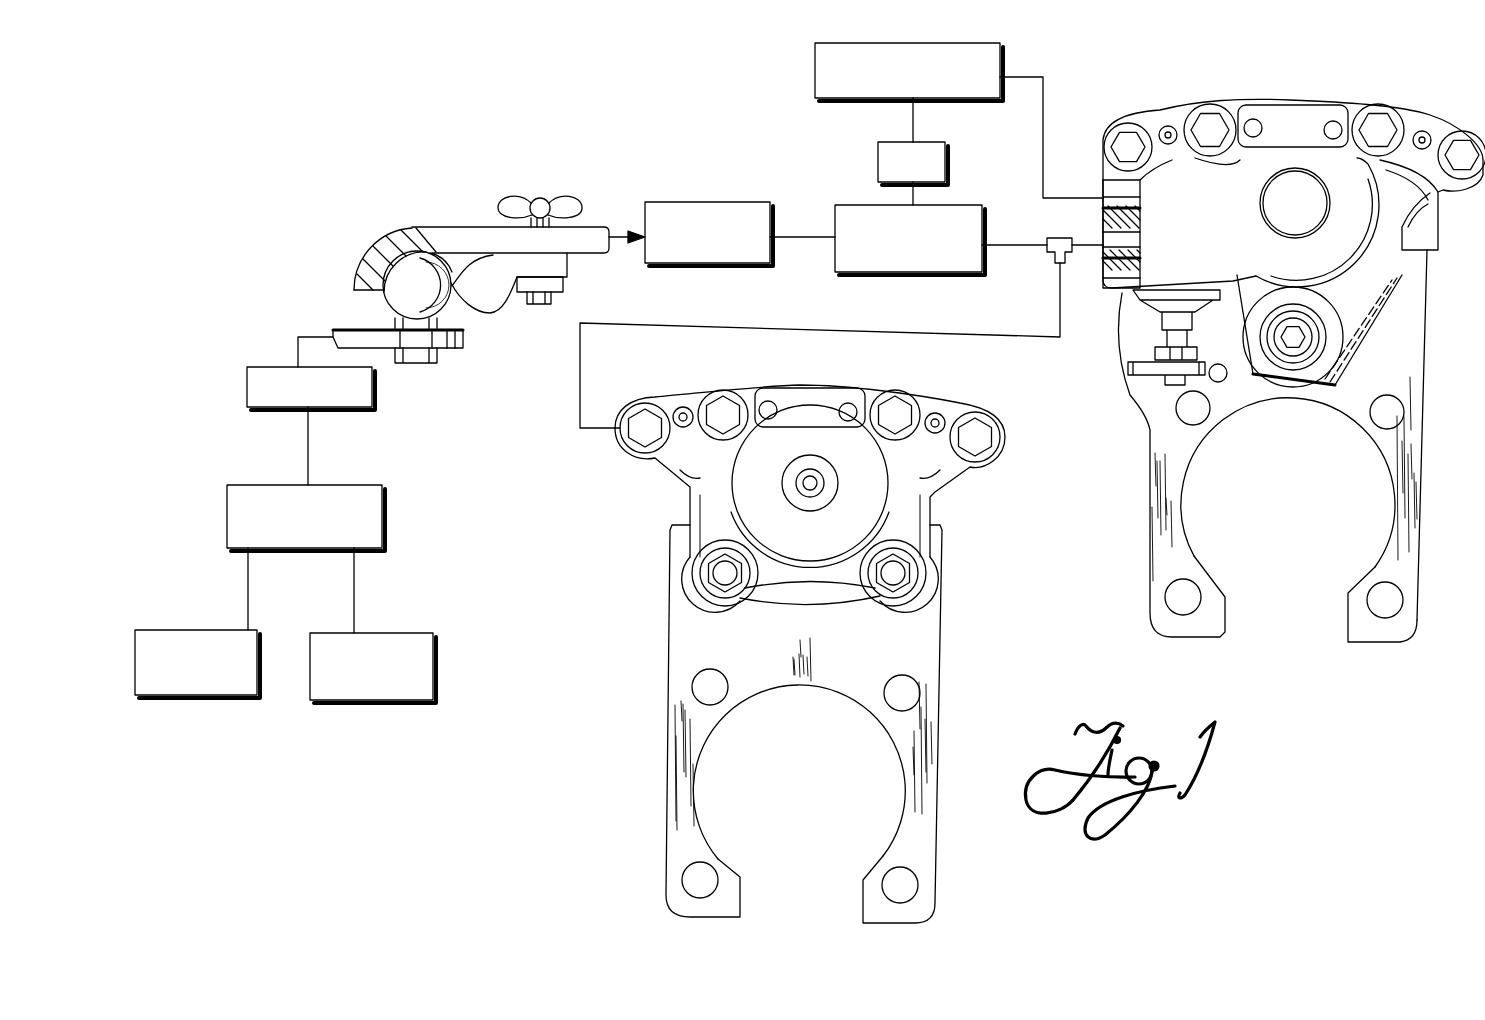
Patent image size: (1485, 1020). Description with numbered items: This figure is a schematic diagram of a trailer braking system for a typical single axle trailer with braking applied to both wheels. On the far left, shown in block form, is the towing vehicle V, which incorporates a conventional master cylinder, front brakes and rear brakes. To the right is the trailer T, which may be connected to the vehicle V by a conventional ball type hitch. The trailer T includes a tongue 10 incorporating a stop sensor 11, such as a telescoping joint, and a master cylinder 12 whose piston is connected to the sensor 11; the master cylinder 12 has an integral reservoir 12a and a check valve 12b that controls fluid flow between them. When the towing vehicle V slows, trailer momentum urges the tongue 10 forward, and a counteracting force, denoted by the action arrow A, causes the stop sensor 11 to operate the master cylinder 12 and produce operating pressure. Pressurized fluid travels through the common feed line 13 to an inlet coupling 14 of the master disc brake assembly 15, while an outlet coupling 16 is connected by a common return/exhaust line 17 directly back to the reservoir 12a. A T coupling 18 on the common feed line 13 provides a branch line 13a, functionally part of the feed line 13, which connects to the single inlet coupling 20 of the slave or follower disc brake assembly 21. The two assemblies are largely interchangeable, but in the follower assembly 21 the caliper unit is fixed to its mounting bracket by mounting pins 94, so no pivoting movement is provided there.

The tongue 10 is at (582, 247).
The stop sensor 11 is at (717, 200).
The master cylinder 12 is at (898, 268).
The reservoir 12a is at (815, 59).
The check valve 12b is at (878, 151).
The common feed line 13 is at (1014, 248).
The branch line 13a is at (690, 330).
The inlet coupling 14 is at (1097, 248).
The master disc brake assembly 15 is at (1272, 348).
The outlet coupling 16 is at (1115, 200).
The common return/exhaust line 17 is at (1045, 96).
The T coupling 18 is at (1050, 237).
The inlet coupling 20 is at (812, 478).
The slave/follower disc brake assembly 21 is at (834, 633).
The mounting pins 94 is at (728, 578).
The trailer T is at (416, 133).
The action arrow A is at (608, 224).
The vehicle V is at (262, 362).